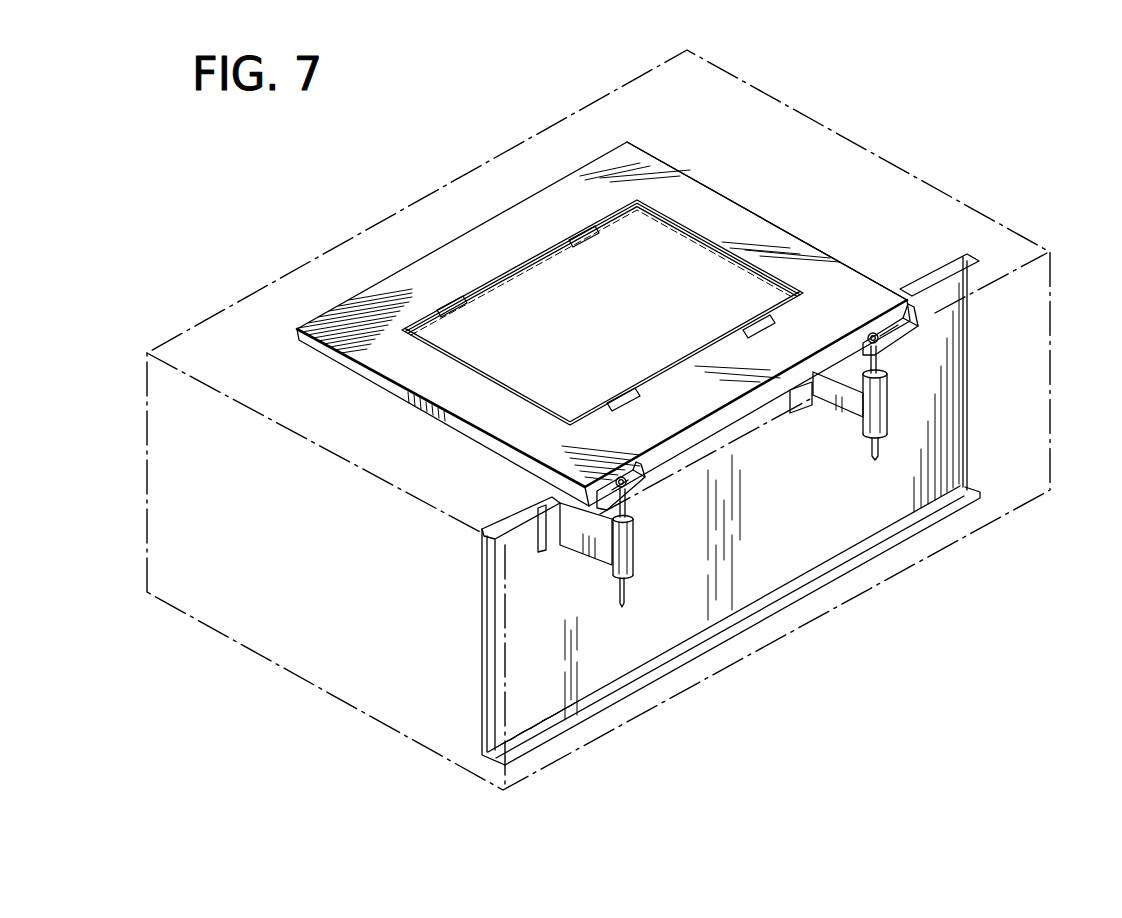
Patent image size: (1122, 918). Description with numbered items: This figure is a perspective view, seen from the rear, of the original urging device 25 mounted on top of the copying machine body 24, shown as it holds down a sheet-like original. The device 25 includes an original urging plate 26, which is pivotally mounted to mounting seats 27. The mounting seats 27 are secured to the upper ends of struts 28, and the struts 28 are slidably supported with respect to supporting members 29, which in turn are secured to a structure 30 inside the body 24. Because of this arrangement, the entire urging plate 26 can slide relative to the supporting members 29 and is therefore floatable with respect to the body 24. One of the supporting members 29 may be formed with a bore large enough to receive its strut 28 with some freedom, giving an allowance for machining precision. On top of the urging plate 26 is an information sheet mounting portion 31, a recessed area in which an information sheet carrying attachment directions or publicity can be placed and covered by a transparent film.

The copying machine body 24 is at (863, 162).
The original urging device 25 is at (755, 178).
The original urging plate 26 is at (817, 258).
The mounting seats 27 is at (633, 485).
The struts 28 is at (628, 589).
The supporting members 29 is at (583, 537).
The structure 30 is at (983, 428).
The information sheet mounting portion 31 is at (537, 290).